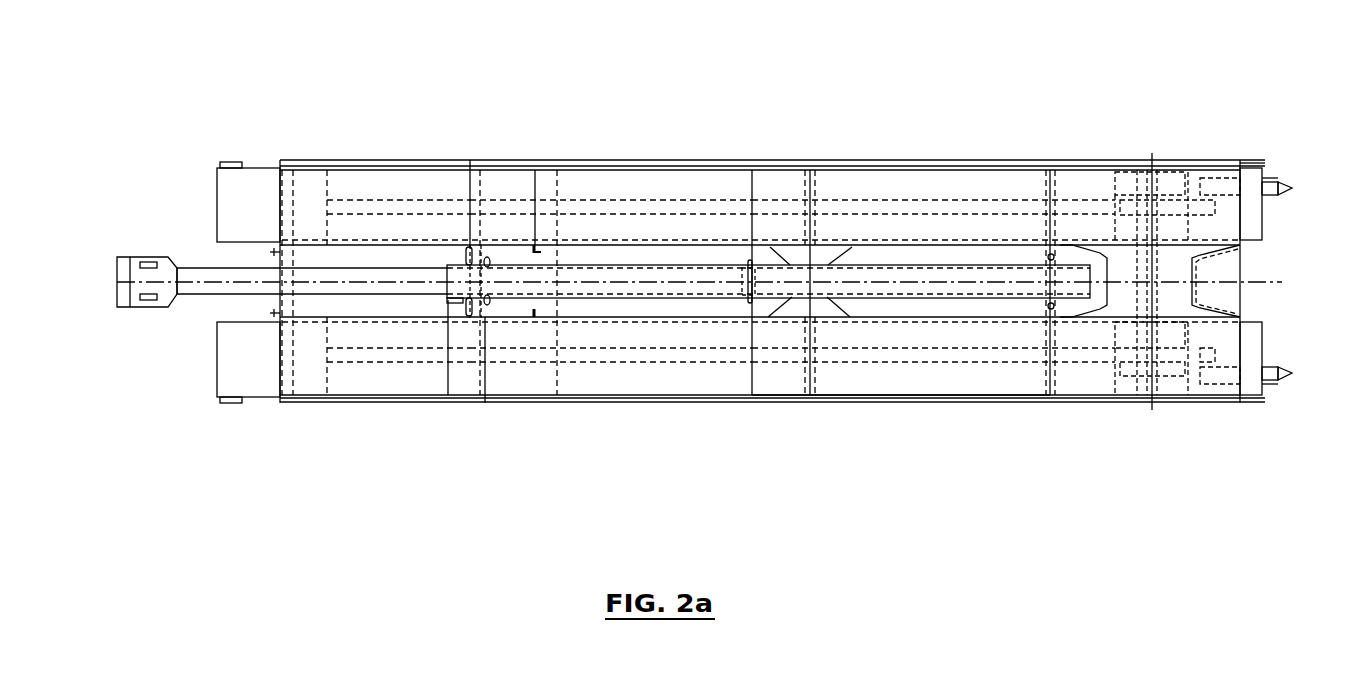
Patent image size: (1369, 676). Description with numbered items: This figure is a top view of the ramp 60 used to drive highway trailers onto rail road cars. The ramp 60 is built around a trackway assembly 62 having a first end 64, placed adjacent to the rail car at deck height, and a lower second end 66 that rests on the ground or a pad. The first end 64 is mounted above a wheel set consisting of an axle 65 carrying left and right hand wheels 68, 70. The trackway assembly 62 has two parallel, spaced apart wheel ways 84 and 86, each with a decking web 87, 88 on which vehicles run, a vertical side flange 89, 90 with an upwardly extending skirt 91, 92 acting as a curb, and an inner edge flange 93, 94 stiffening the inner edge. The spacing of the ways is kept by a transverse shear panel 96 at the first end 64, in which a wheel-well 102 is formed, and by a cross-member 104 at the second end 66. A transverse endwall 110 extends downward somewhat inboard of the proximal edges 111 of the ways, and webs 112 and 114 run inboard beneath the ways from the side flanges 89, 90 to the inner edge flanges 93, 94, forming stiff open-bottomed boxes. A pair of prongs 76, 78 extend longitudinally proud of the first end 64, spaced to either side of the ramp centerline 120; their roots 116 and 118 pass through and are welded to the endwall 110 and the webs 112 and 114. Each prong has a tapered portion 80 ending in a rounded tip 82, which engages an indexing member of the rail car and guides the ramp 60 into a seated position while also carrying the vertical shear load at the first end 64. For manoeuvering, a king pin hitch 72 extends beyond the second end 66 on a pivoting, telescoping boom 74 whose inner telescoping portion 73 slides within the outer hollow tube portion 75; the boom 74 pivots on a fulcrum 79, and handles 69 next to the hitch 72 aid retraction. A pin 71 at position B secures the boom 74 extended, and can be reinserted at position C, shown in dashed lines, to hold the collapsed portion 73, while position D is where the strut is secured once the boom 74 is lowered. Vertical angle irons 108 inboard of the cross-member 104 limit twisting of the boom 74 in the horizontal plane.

The ramp 60 is at (674, 84).
The trackway assembly 62 is at (515, 170).
The first end 64 is at (1220, 175).
The axle 65 is at (1160, 356).
The second end 66 is at (255, 168).
The left hand wheel 68 is at (1118, 380).
The handles 69 is at (149, 262).
The right hand wheel 70 is at (1125, 160).
The pin 71 is at (486, 302).
The king pin hitch 72 is at (135, 308).
The inner telescoping portion 73 is at (210, 268).
The boom 74 is at (177, 268).
The outer hollow tube portion 75 is at (656, 300).
The first prong 76 is at (1272, 384).
The second prong 78 is at (1273, 182).
The fulcrum 79 is at (812, 286).
The tapered portion 80 is at (1276, 182).
The rounded tip 82 is at (1308, 197).
The left hand wheel way 84 is at (368, 378).
The right hand wheel way 86 is at (350, 183).
The decking web 87 is at (598, 380).
The decking web 88 is at (628, 172).
The vertical side flange 89 is at (723, 397).
The vertical side flange 90 is at (708, 162).
The skirt 91 is at (867, 402).
The skirt 92 is at (850, 162).
The inner edge flange 93 is at (890, 322).
The inner edge flange 94 is at (873, 240).
The shear panel 96 is at (1117, 300).
The wheel-well 102 is at (1118, 230).
The cross-member 104 is at (300, 386).
The vertical angle irons 108 is at (468, 318).
The endwall 110 is at (1245, 325).
The proximal edges 111 is at (1262, 226).
The web 112 is at (965, 380).
The web 114 is at (960, 190).
The root 116 is at (1203, 373).
The root 118 is at (1203, 172).
The ramp centerline 120 is at (113, 283).
The position B is at (487, 262).
The position C is at (777, 247).
The position D is at (537, 250).